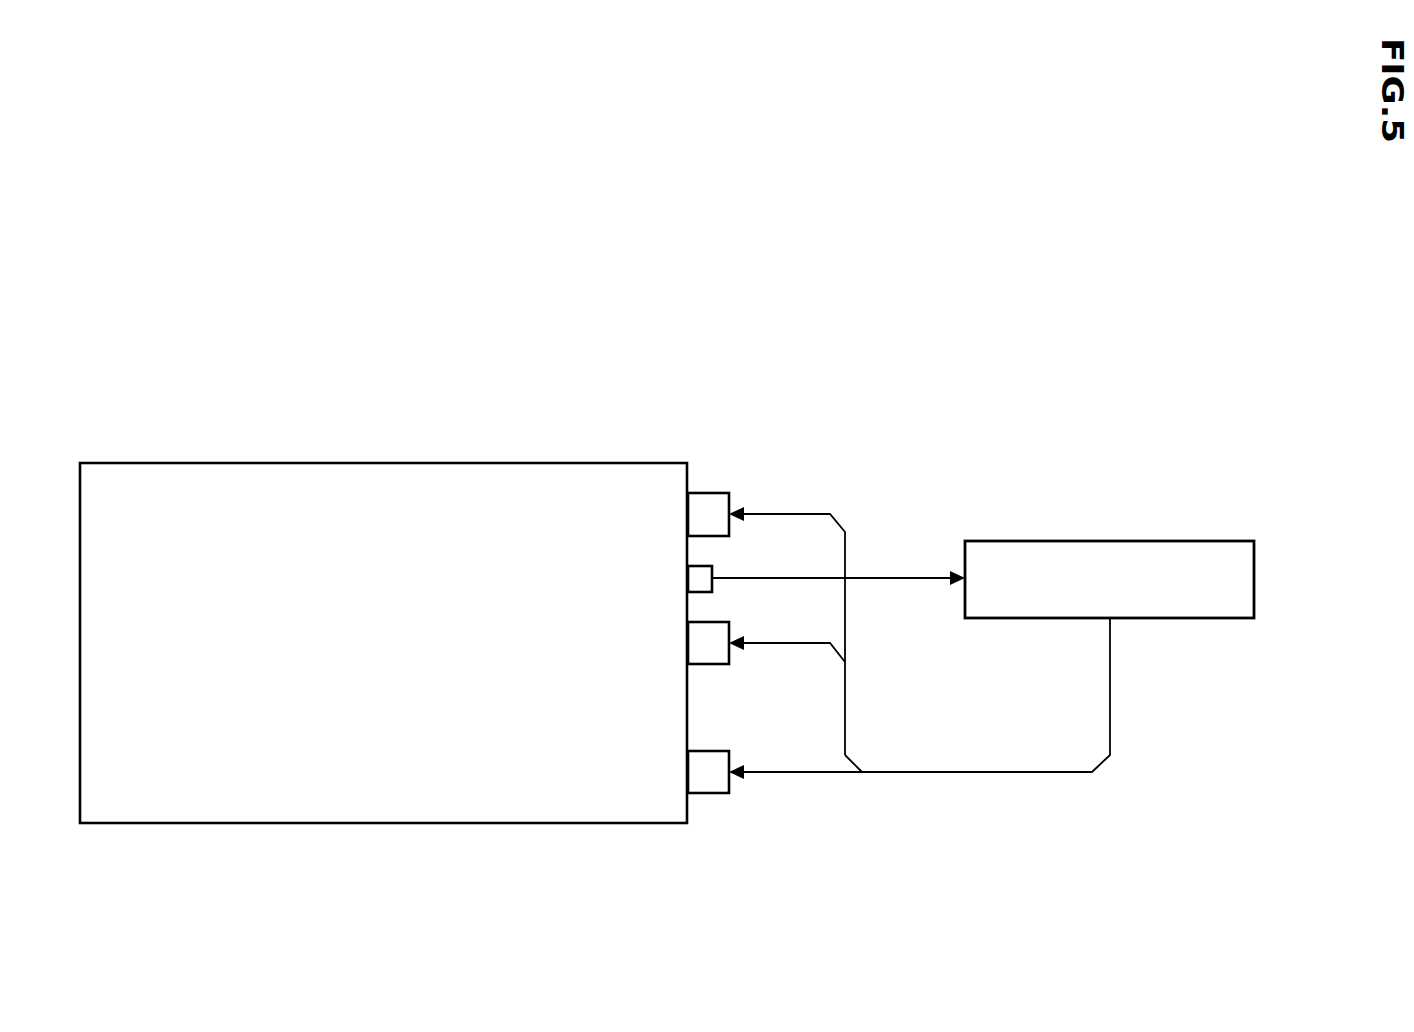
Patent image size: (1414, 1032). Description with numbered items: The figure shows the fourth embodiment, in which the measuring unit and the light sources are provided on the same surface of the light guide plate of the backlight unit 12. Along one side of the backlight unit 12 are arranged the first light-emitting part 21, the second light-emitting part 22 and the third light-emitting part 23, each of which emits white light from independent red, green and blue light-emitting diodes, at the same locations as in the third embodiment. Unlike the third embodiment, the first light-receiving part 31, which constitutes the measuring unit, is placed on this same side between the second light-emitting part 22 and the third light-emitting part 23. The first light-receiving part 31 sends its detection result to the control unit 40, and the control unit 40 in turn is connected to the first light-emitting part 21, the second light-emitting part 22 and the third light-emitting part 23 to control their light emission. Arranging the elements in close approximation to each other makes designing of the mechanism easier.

The backlight unit 12 is at (383, 462).
The first light-emitting part 21 is at (703, 795).
The second light-emitting part 22 is at (703, 665).
The third light-emitting part 23 is at (708, 492).
The first light-receiving part 31 is at (693, 578).
The control unit 40 is at (1256, 578).